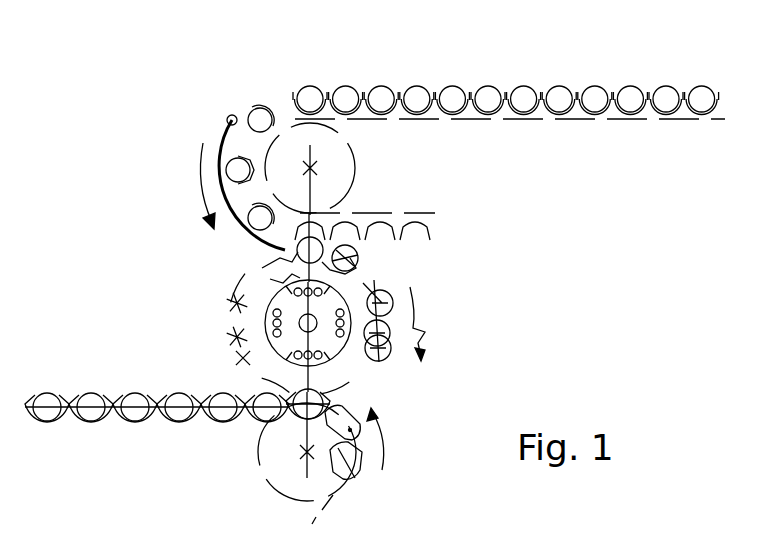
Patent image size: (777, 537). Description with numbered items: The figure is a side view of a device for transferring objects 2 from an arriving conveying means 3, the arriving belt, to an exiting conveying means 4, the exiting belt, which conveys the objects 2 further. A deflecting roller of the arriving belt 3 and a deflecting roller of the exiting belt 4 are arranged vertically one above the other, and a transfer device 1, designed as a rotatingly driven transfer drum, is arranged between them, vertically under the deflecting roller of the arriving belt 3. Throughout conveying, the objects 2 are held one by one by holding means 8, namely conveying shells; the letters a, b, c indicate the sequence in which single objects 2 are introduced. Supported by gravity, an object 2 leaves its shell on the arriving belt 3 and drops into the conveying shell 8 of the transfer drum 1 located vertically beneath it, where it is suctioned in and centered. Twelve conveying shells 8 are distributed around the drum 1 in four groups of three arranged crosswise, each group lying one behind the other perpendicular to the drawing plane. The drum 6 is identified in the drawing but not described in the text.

The transfer device 1 is at (518, 280).
The object 2 is at (666, 86).
The arriving conveying means 3 is at (529, 175).
The exiting conveying means 4 is at (111, 473).
The transfer drum 6 is at (328, 343).
The holding means 8 is at (270, 277).